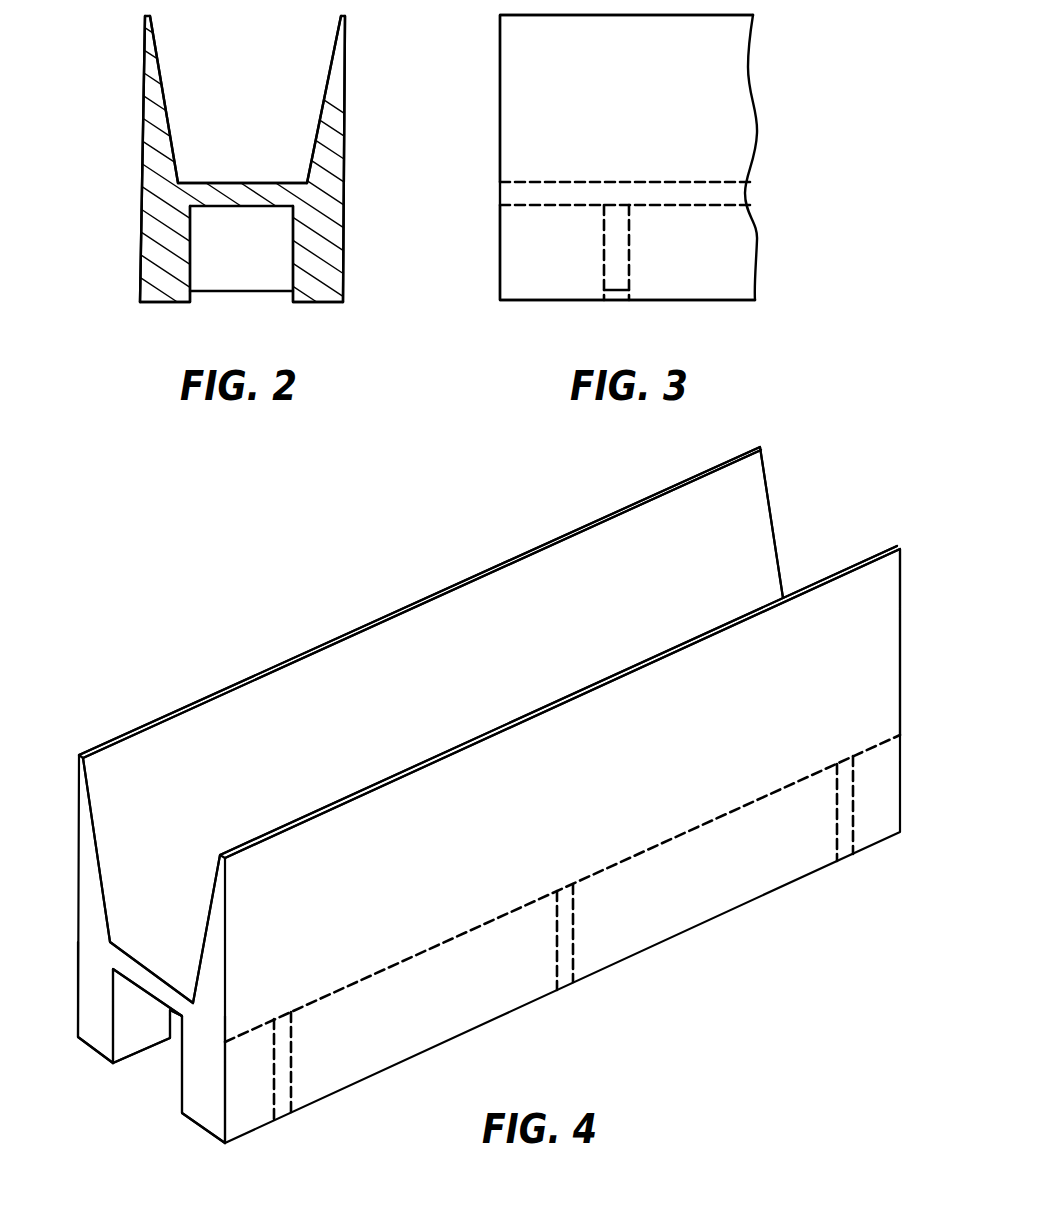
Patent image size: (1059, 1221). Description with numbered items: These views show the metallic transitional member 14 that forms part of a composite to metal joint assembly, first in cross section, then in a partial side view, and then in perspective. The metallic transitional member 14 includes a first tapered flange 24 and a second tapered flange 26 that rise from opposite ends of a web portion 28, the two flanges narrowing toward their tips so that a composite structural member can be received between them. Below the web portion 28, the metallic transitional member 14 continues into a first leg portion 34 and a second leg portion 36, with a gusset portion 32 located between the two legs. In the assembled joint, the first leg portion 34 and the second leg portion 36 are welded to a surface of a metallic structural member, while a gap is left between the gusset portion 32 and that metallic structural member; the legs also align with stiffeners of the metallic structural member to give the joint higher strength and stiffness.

In FIG. 2, the metallic transitional member 14 is at (130, 128).
In FIG. 3, the metallic transitional member 14 is at (488, 88).
In FIG. 4, the metallic transitional member 14 is at (115, 718).
In FIG. 2, the first tapered flange 24 is at (153, 77).
In FIG. 4, the first tapered flange 24 is at (433, 679).
In FIG. 2, the second tapered flange 26 is at (337, 105).
In FIG. 3, the second tapered flange 26 is at (618, 109).
In FIG. 4, the second tapered flange 26 is at (536, 814).
In FIG. 2, the web portion 28 is at (243, 182).
In FIG. 3, the web portion 28 is at (692, 190).
In FIG. 4, the web portion 28 is at (163, 952).
In FIG. 2, the gusset portion 32 is at (278, 265).
In FIG. 3, the gusset portion 32 is at (616, 250).
In FIG. 4, the gusset portion 32 is at (172, 1041).
In FIG. 2, the first leg portion 34 is at (157, 266).
In FIG. 3, the first leg portion 34 is at (545, 262).
In FIG. 4, the first leg portion 34 is at (77, 1000).
In FIG. 2, the second leg portion 36 is at (330, 213).
In FIG. 4, the second leg portion 36 is at (180, 1099).